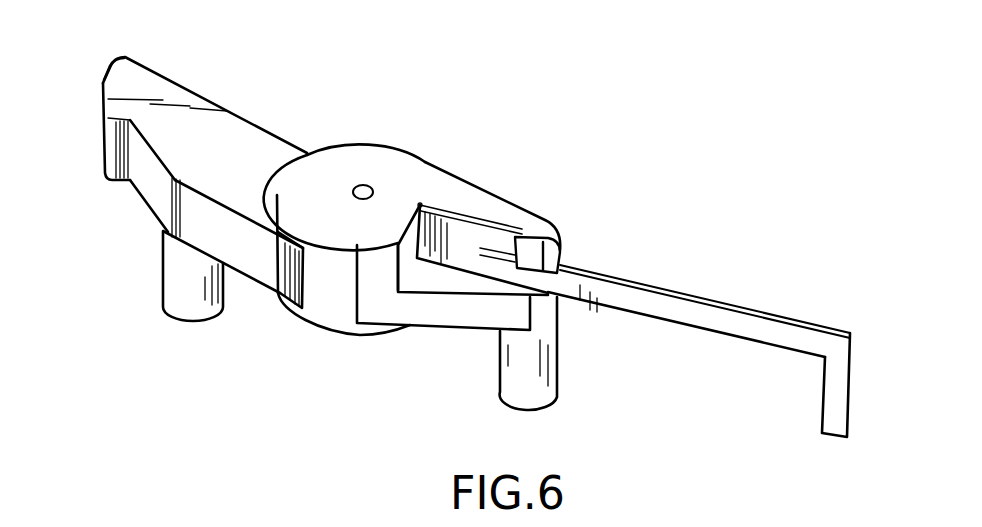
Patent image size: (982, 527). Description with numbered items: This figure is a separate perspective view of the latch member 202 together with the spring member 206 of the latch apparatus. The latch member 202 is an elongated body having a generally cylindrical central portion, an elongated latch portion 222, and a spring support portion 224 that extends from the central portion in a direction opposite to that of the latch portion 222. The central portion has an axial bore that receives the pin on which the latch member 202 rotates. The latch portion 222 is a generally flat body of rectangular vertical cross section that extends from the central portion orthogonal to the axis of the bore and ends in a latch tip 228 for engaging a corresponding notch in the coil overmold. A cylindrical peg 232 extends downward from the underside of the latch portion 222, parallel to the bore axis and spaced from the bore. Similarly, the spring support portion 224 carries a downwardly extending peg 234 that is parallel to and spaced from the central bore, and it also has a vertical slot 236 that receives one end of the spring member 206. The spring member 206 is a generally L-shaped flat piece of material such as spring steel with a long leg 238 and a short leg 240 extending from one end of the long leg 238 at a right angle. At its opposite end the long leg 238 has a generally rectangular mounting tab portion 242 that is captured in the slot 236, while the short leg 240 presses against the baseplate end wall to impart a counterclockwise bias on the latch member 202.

The latch member 202 is at (353, 146).
The spring member 206 is at (758, 313).
The latch portion 222 is at (165, 85).
The spring support portion 224 is at (433, 318).
The latch tip 228 is at (107, 72).
The cylindrical peg 232 is at (200, 310).
The peg 234 is at (547, 387).
The vertical slot 236 is at (462, 212).
The long leg 238 is at (752, 333).
The short leg 240 is at (822, 410).
The mounting tab portion 242 is at (493, 230).